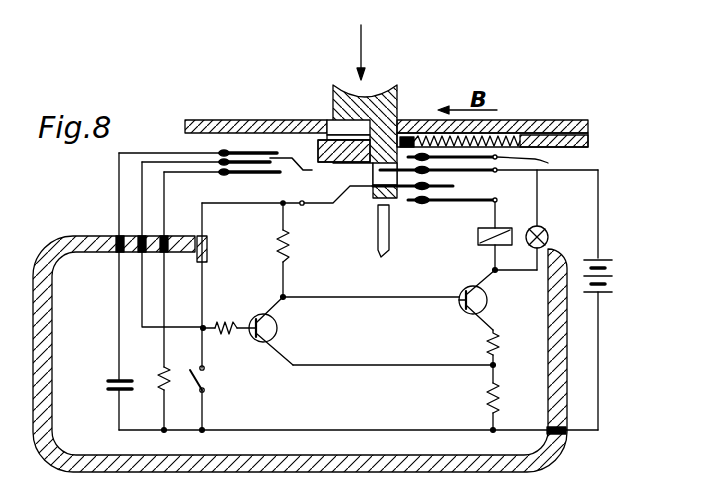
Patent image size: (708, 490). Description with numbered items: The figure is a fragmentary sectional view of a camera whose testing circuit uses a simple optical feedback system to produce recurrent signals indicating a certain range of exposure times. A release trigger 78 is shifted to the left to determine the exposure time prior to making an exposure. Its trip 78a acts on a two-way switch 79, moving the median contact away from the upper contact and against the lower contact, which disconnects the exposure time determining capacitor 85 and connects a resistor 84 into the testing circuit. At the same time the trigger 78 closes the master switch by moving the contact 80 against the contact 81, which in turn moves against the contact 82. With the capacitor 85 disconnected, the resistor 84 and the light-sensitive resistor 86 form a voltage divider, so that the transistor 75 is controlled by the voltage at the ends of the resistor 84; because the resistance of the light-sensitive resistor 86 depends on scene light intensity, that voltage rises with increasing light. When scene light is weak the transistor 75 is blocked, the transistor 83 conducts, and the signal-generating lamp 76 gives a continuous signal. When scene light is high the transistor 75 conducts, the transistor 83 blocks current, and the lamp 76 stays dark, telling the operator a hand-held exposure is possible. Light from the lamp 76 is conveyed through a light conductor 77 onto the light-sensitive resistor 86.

The transistor 75 is at (277, 330).
The signal-generating lamp 76 is at (546, 231).
The light conductor 77 is at (545, 455).
The release trigger 78 is at (397, 100).
The trip 78a is at (327, 152).
The two-way switch 79 is at (303, 168).
The contact 80 is at (497, 171).
The contact 81 is at (499, 172).
The contact 82 is at (492, 161).
The transistor 83 is at (484, 311).
The resistor 84 is at (160, 371).
The exposure time determining capacitor 85 is at (111, 381).
The light-sensitive resistor 86 is at (208, 246).